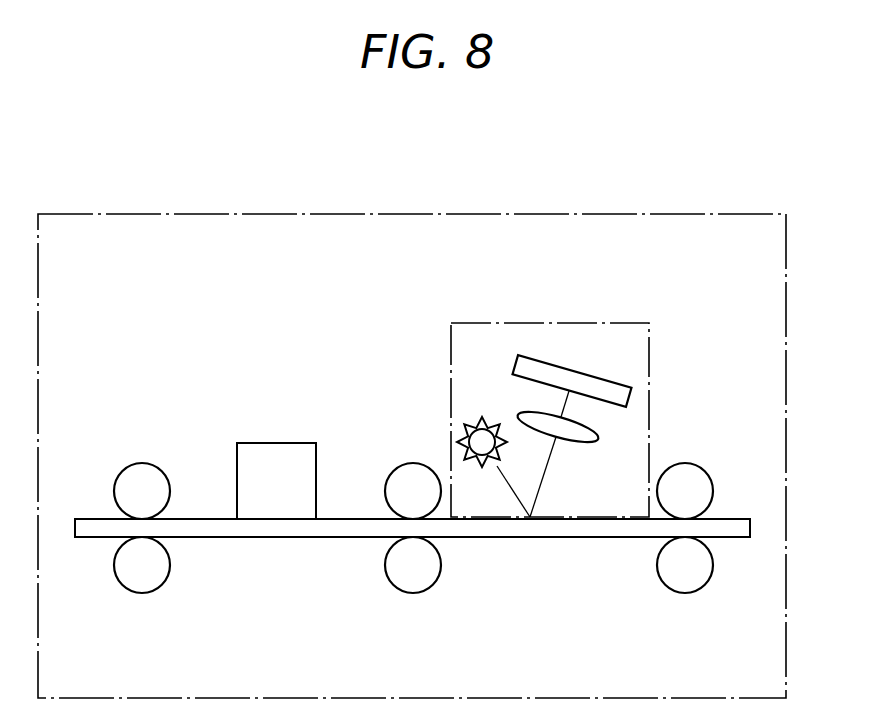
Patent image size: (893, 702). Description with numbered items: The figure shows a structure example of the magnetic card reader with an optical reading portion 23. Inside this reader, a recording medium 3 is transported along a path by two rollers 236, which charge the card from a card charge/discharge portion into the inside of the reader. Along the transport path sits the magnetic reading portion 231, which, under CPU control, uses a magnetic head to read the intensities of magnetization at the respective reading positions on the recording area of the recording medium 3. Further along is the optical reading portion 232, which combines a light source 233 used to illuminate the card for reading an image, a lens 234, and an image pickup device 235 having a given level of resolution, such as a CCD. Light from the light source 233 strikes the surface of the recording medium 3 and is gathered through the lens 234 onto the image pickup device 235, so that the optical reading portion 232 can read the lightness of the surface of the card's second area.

The magnetic card reader with an optical reading portion 23 is at (678, 212).
The recording medium 3 is at (735, 518).
The rollers 236 is at (144, 462).
The magnetic reading portion 231 is at (274, 442).
The optical reading portion 232 is at (596, 322).
The light source 233 is at (455, 438).
The lens 234 is at (600, 435).
The image pickup device 235 is at (625, 378).